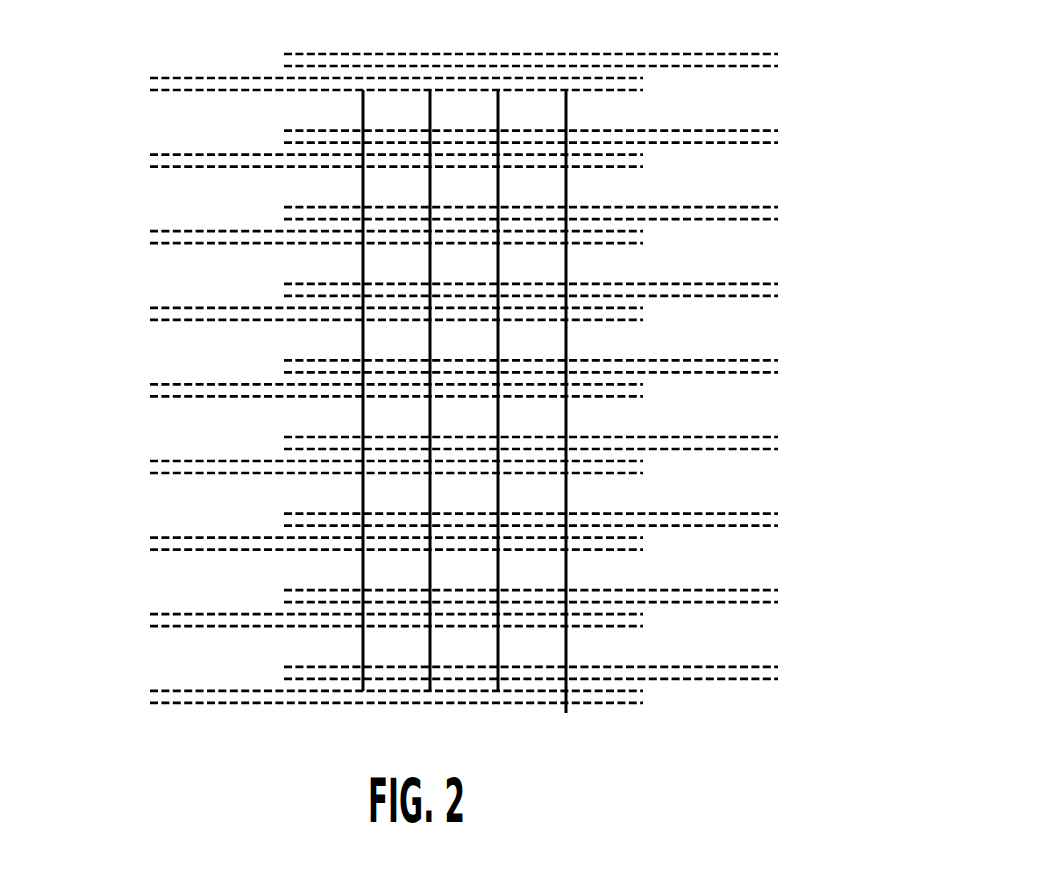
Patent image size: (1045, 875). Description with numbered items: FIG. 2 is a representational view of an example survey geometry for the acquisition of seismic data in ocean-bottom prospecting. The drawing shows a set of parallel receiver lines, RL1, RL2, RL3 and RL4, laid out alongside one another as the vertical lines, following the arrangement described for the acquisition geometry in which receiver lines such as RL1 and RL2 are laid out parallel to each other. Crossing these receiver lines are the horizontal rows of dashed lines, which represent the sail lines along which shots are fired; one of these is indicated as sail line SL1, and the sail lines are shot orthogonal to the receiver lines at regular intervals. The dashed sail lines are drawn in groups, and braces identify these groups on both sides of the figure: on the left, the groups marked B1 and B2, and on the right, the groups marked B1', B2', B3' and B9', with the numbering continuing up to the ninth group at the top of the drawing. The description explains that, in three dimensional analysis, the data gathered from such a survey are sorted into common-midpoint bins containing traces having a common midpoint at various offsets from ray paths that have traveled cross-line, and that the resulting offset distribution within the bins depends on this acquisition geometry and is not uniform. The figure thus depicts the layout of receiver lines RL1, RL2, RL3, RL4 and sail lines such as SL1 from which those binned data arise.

The first memory bank (left) B1 is at (338, 665).
The second memory bank (left) B2 is at (338, 588).
The first memory bank (right) B1' is at (592, 643).
The second memory bank (right) B2' is at (592, 566).
The third memory bank (right) B3' is at (592, 488).
The ninth memory bank (right) B9' is at (591, 85).
The receiver line RL1 is at (362, 502).
The receiver line RL2 is at (430, 580).
The third redundancy line RL3 is at (498, 490).
The fourth redundancy line RL4 is at (566, 580).
The sail line SL1 is at (657, 695).